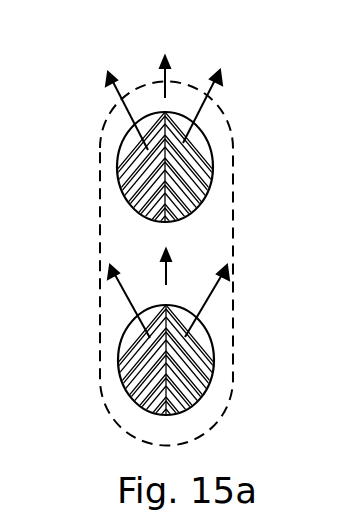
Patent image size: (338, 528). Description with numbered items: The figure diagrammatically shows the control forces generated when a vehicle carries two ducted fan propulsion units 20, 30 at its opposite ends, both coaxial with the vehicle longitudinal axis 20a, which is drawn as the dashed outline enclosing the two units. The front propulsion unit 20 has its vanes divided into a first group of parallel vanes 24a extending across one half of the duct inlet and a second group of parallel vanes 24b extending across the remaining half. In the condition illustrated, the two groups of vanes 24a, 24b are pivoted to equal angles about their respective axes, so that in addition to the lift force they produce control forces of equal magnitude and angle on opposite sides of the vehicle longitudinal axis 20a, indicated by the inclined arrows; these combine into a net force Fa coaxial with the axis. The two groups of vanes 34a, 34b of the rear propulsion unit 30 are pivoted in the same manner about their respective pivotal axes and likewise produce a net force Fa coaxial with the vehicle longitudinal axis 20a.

The ducted fan propulsion unit 20 is at (163, 163).
The vehicle longitudinal axis 20a is at (172, 82).
The first group of parallel vanes 24a is at (138, 138).
The second group of parallel vanes 24b is at (184, 124).
The rear propulsion unit 30 is at (172, 365).
The first group of vanes of the rear propulsion unit 34a is at (130, 368).
The second group of vanes of the rear propulsion unit 34b is at (212, 331).